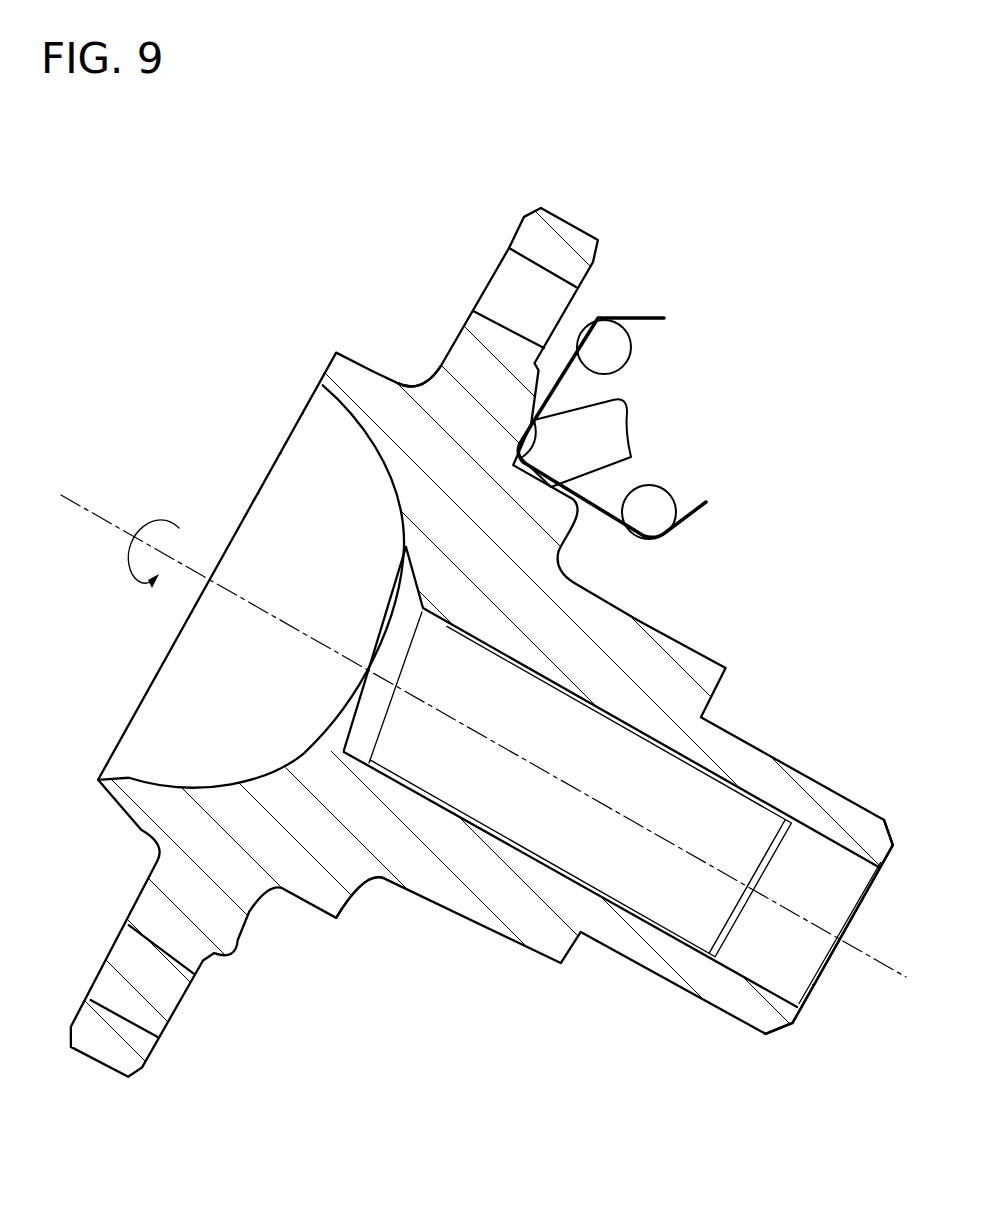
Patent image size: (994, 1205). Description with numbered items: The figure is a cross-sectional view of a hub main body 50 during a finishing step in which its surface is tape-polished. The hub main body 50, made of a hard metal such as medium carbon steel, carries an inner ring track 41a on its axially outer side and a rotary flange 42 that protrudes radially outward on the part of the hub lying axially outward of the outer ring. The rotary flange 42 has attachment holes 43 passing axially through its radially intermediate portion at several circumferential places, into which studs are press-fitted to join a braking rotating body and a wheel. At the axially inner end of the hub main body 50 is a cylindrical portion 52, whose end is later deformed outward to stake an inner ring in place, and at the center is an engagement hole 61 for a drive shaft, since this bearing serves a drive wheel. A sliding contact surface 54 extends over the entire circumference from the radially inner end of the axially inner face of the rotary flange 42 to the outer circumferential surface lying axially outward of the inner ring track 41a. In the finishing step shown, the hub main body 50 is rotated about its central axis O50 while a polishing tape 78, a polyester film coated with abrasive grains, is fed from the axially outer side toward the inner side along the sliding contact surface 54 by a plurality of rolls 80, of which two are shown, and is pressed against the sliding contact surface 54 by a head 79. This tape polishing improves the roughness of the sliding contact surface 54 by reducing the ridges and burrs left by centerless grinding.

The hub main body 50 is at (448, 883).
The central axis of the hub main body O50 is at (83, 507).
The attachment holes 43 is at (537, 264).
The rotary flange 42 is at (557, 238).
The sliding contact surface 54 is at (468, 388).
The inner ring track 41a is at (393, 875).
The engagement hole 61 is at (640, 900).
The cylindrical portion 52 is at (730, 998).
The polishing tape 78 is at (605, 520).
The head 79 is at (600, 435).
The rolls 80 is at (612, 347).